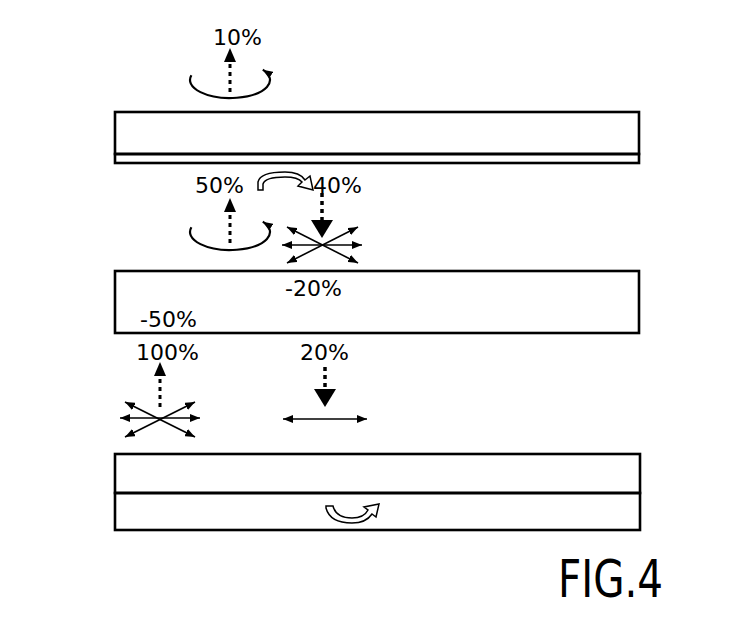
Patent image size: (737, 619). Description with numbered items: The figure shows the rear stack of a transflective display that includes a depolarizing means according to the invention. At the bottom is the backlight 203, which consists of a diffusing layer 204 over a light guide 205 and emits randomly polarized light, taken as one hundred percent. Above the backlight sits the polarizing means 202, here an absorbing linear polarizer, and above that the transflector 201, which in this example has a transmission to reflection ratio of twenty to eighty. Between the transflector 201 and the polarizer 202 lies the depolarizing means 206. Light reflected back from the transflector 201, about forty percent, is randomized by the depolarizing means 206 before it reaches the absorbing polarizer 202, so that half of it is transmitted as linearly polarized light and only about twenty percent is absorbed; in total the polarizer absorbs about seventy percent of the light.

The transflector 201 is at (113, 143).
The depolarizing means 206 is at (113, 160).
The polarizing means 202 is at (113, 297).
The backlight 203 is at (371, 492).
The diffusing layer 204 is at (642, 470).
The light guide 205 is at (642, 512).